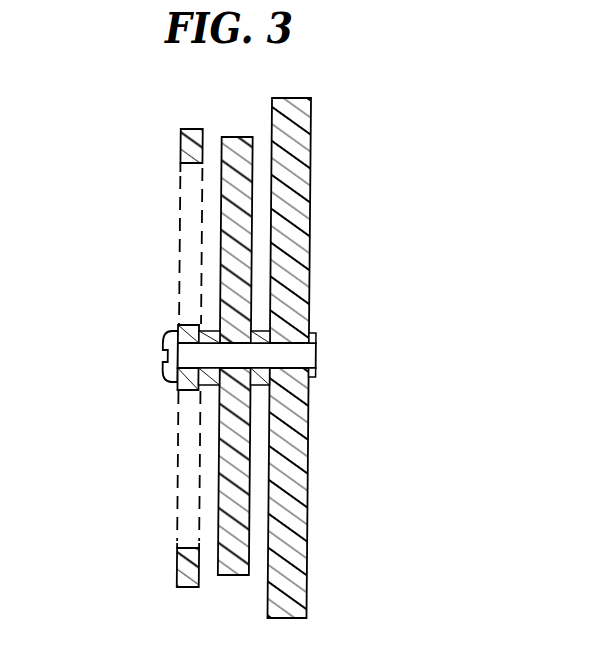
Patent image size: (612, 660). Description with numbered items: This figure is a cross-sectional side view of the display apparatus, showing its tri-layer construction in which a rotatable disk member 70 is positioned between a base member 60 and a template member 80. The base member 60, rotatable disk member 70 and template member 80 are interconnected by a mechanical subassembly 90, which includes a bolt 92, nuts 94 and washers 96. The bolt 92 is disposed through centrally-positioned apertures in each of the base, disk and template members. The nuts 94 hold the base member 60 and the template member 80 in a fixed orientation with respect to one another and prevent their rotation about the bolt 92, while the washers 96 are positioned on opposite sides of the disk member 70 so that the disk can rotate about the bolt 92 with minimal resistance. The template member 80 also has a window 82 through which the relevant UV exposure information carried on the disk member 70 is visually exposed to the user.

The base member 60 is at (311, 162).
The rotatable disk member 70 is at (237, 137).
The template member 80 is at (123, 349).
The window 82 is at (180, 205).
The mechanical subassembly 90 is at (151, 353).
The bolt 92 is at (212, 355).
The nuts 94 is at (206, 331).
The washers 96 is at (224, 386).